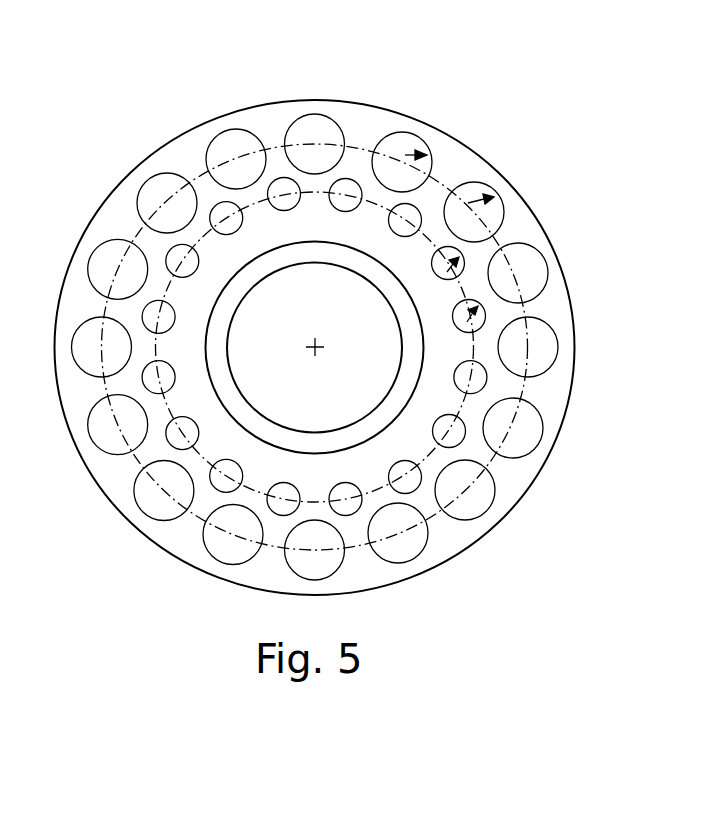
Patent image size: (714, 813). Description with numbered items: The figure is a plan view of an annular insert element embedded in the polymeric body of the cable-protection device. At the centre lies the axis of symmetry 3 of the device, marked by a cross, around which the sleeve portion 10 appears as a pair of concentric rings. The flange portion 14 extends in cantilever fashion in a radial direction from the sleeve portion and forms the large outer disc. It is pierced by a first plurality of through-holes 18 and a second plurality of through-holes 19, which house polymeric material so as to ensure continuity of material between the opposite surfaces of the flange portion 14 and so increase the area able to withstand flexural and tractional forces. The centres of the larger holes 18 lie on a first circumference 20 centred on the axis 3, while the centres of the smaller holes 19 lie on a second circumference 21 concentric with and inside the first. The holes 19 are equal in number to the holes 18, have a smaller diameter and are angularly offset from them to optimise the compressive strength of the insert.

The axis of symmetry 3 is at (320, 348).
The sleeve portion 10 is at (268, 268).
The flange portion 14 is at (123, 213).
The first plurality of through-holes 18 is at (468, 203).
The second plurality of through-holes 19 is at (447, 272).
The first circumference 20 is at (366, 149).
The second circumference 21 is at (286, 190).